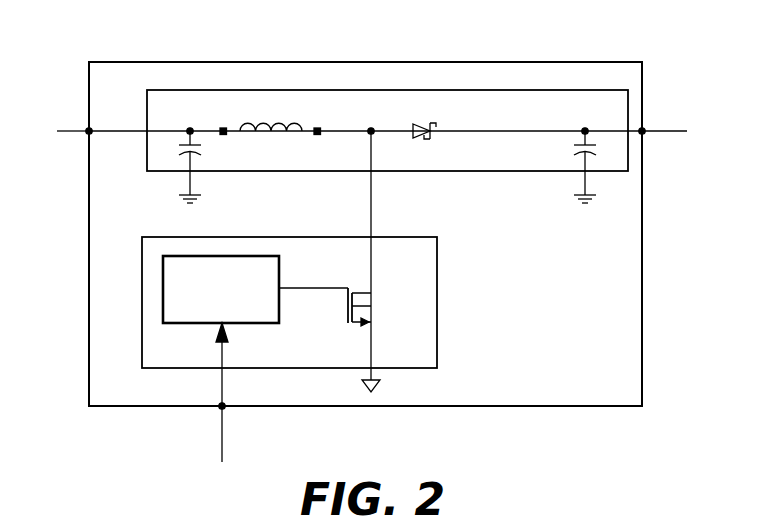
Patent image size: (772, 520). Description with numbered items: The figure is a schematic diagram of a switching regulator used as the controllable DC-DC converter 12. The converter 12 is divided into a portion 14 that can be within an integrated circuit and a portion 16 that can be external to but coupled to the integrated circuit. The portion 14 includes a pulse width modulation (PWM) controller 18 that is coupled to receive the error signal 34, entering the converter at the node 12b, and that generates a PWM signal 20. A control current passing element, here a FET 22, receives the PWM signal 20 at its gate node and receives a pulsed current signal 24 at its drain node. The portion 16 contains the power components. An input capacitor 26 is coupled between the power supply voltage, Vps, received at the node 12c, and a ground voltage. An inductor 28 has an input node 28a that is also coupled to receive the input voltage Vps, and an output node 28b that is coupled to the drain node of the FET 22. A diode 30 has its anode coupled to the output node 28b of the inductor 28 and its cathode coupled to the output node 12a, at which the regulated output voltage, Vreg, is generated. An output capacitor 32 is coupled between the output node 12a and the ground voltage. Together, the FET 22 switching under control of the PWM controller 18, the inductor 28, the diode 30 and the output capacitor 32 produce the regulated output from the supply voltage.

The controllable DC-DC converter 12 is at (302, 61).
The output node 12a is at (645, 133).
The node 12b is at (220, 407).
The node 12c is at (87, 133).
The portion 14 is at (154, 235).
The portion 16 is at (147, 113).
The pulse width modulation (PWM) controller 18 is at (163, 267).
The PWM signal 20 is at (307, 290).
The FET 22 is at (363, 290).
The pulsed current signal 24 is at (370, 212).
The input capacitor 26 is at (202, 157).
The inductor 28 is at (278, 127).
The input node 28a is at (223, 128).
The output node 28b is at (317, 134).
The diode 30 is at (413, 128).
The output capacitor 32 is at (577, 157).
The error signal 34 is at (220, 442).